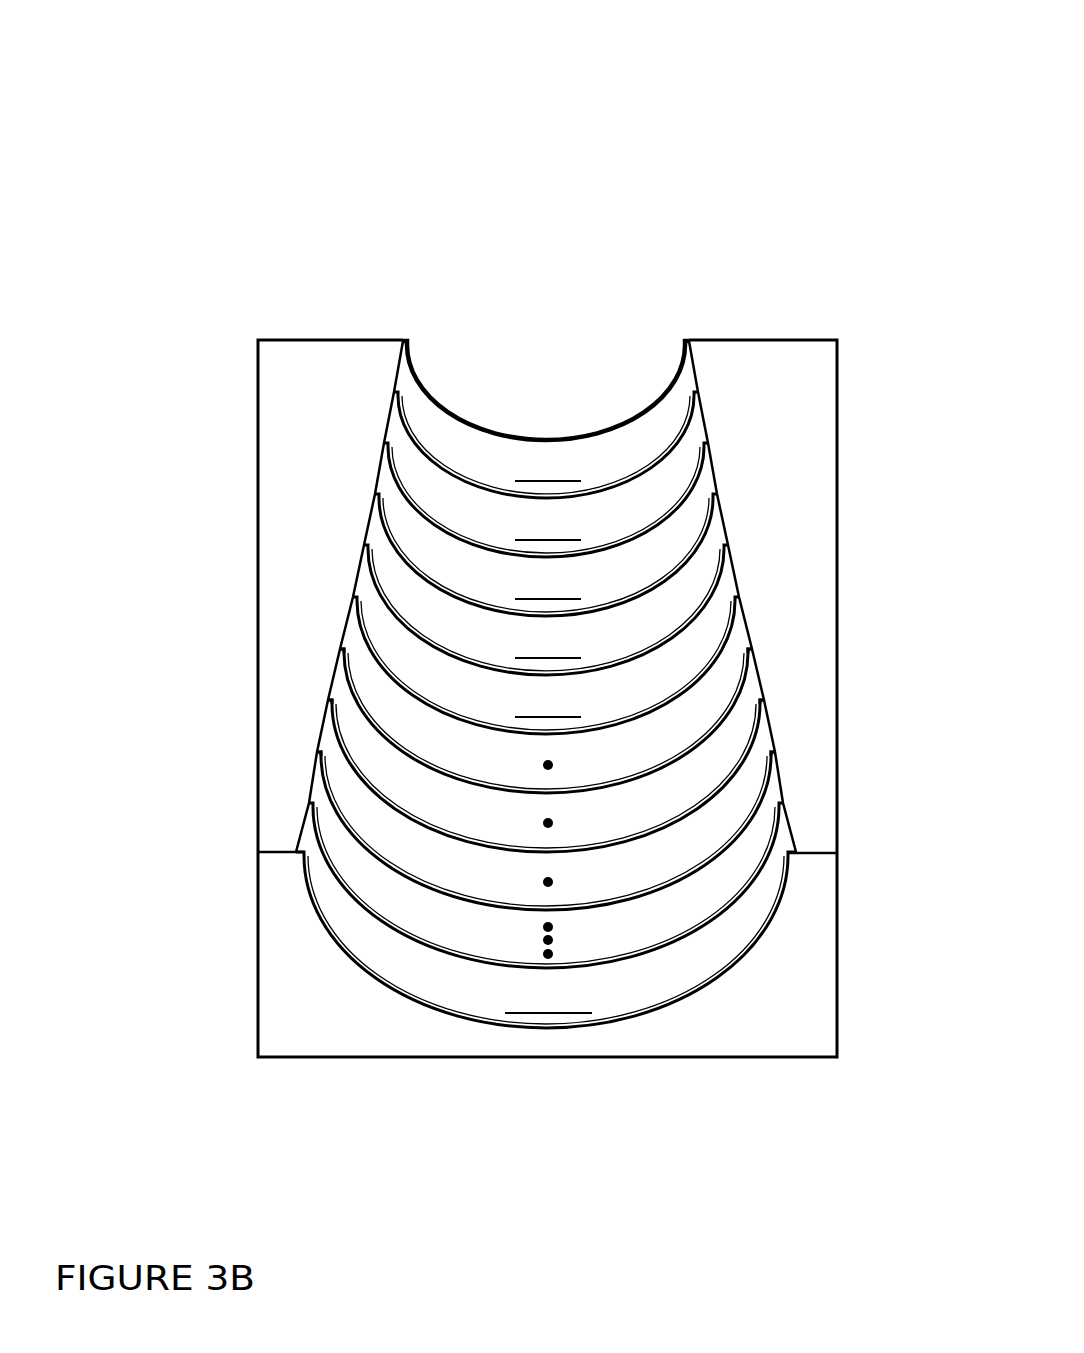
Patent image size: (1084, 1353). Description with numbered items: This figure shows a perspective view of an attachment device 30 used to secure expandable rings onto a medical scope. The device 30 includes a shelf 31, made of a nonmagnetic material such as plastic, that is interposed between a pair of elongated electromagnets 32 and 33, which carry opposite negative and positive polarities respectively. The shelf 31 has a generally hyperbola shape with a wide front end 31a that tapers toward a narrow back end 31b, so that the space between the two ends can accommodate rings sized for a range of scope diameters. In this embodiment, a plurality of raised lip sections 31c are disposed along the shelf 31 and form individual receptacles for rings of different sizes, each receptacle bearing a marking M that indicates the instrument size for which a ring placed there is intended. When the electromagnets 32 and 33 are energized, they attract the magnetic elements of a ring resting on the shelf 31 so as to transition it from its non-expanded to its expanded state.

The attachment device 30 is at (221, 195).
The shelf 31 is at (770, 904).
The wide front end 31a is at (768, 1035).
The narrow back end 31b is at (548, 430).
The raised lip sections 31c is at (316, 746).
The electromagnet 32 is at (320, 611).
The electromagnet 33 is at (810, 611).
The marking M is at (590, 582).